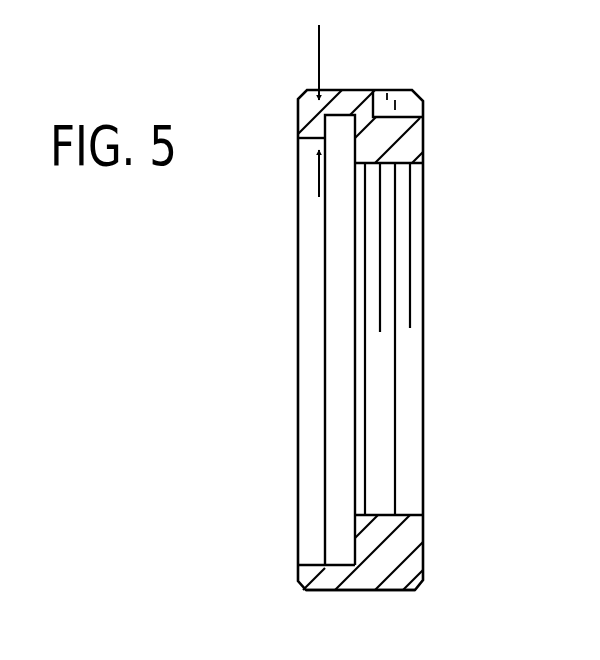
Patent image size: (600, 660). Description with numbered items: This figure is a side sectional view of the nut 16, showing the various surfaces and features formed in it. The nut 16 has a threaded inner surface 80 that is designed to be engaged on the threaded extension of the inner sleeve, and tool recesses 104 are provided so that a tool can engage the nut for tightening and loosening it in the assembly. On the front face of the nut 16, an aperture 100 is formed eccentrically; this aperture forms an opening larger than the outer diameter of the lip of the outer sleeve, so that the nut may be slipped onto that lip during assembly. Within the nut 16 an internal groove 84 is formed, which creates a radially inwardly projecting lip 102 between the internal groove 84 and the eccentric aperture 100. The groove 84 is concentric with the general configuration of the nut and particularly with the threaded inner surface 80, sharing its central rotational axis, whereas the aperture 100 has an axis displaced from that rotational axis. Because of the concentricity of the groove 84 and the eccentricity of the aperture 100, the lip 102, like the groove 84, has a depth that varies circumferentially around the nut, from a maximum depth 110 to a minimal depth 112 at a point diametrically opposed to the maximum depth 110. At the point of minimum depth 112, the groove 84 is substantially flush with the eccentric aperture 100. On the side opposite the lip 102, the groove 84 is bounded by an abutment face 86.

The nut 16 is at (152, 502).
The threaded inner surface 80 is at (397, 528).
The internal groove 84 is at (312, 128).
The abutment face 86 is at (357, 155).
The aperture 100 is at (307, 217).
The lip 102 is at (342, 128).
The tool recesses 104 is at (405, 103).
The maximum depth 110 is at (320, 48).
The minimal depth 112 is at (320, 577).